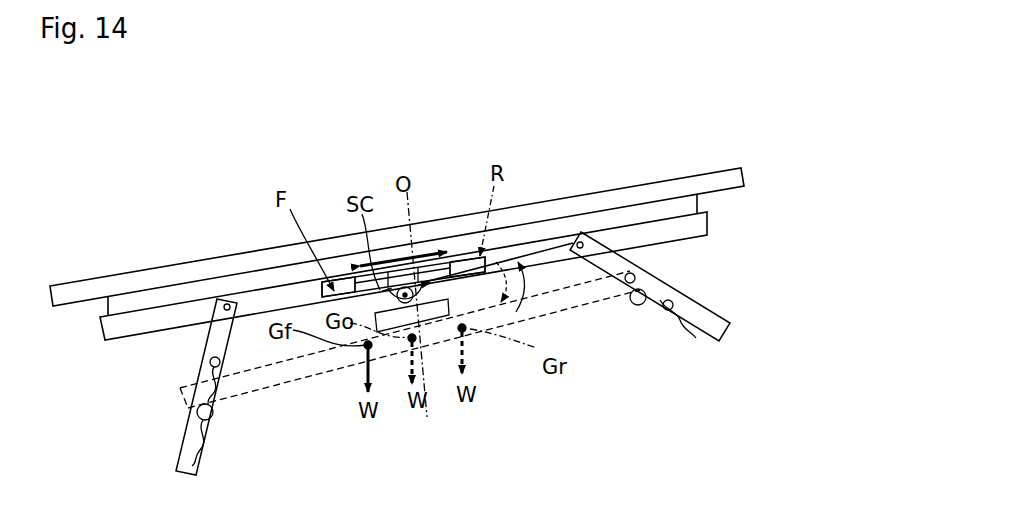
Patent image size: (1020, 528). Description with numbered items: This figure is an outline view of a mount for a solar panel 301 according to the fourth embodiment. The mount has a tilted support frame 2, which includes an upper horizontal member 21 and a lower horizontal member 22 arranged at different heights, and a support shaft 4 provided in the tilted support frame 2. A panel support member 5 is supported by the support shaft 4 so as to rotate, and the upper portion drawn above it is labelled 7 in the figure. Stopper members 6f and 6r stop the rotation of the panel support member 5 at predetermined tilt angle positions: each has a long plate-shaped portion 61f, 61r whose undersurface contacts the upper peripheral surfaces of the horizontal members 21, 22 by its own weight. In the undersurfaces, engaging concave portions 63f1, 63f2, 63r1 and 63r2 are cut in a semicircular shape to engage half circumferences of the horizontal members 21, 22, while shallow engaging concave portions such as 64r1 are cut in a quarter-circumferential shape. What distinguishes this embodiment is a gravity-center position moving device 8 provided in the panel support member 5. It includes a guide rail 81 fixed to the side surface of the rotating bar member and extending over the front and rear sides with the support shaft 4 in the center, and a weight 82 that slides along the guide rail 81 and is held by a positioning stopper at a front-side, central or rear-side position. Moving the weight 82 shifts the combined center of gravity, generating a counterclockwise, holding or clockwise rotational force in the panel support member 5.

The mount for a solar panel 301 is at (238, 168).
The upper rail 7 is at (330, 246).
The panel support member 5 is at (192, 310).
The gravity-center position moving device 8 is at (360, 236).
The guide rail 81 is at (458, 251).
The weight 82 is at (331, 283).
The support shaft 4 is at (413, 303).
The tilted support frame 2 is at (320, 367).
The upper horizontal member 21 is at (633, 293).
The lower horizontal member 22 is at (213, 409).
The stopper member 6f is at (198, 407).
The long plate-shaped portion 61f is at (193, 472).
The engaging concave portion 63f1 is at (211, 361).
The engaging concave portion 63f2 is at (212, 420).
The stopper member 6r is at (681, 331).
The long plate-shaped portion 61r is at (718, 340).
The engaging concave portion 63r1 is at (634, 278).
The engaging concave portion 63r2 is at (668, 310).
The shallow engaging concave portion 64r1 is at (636, 305).